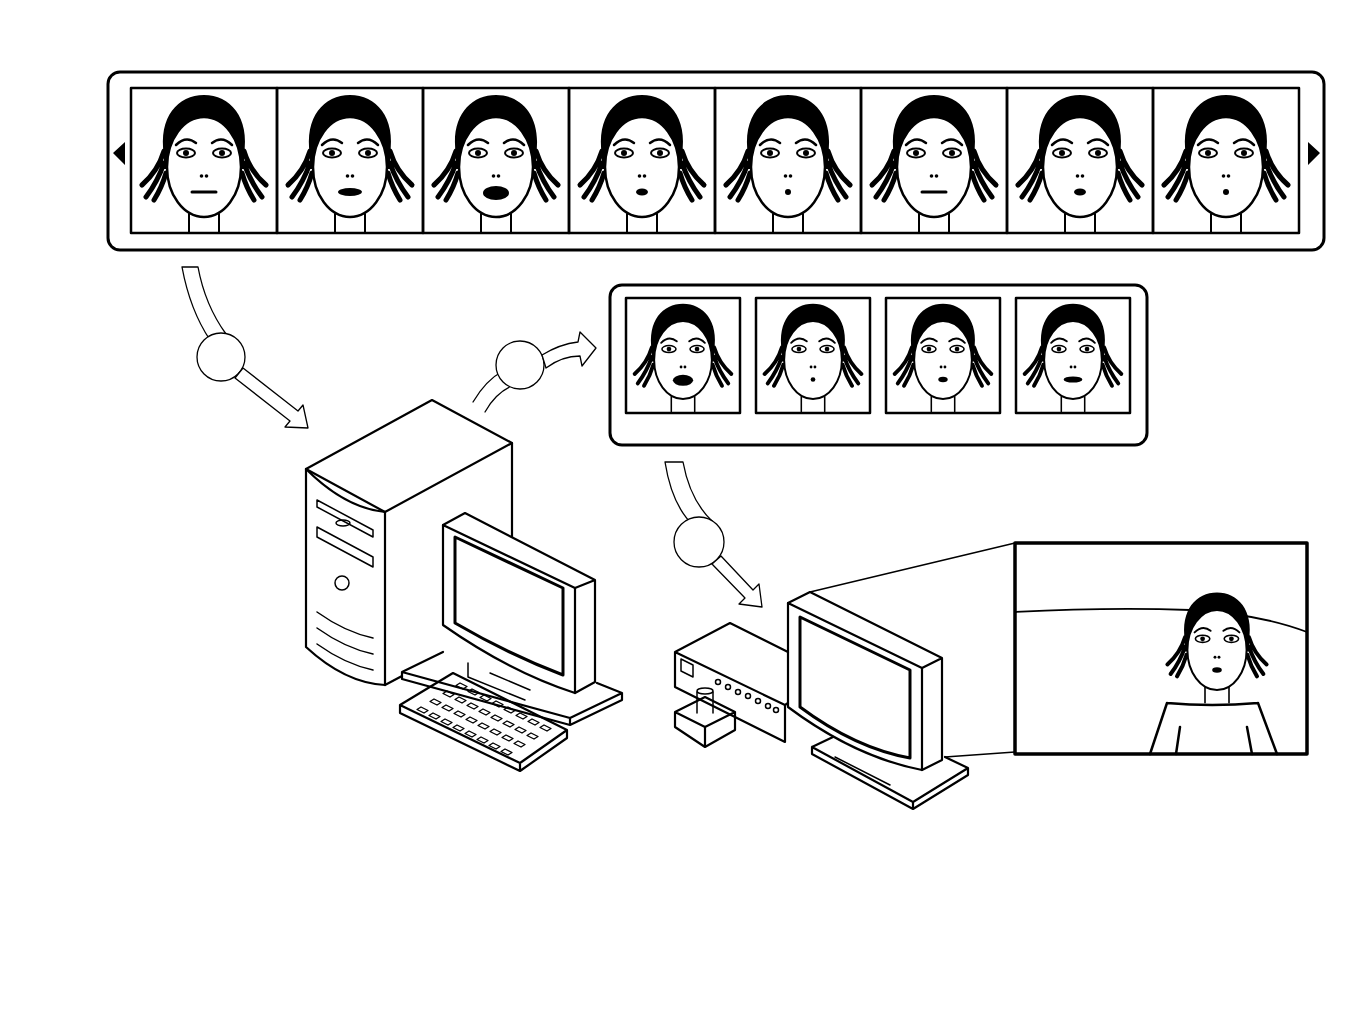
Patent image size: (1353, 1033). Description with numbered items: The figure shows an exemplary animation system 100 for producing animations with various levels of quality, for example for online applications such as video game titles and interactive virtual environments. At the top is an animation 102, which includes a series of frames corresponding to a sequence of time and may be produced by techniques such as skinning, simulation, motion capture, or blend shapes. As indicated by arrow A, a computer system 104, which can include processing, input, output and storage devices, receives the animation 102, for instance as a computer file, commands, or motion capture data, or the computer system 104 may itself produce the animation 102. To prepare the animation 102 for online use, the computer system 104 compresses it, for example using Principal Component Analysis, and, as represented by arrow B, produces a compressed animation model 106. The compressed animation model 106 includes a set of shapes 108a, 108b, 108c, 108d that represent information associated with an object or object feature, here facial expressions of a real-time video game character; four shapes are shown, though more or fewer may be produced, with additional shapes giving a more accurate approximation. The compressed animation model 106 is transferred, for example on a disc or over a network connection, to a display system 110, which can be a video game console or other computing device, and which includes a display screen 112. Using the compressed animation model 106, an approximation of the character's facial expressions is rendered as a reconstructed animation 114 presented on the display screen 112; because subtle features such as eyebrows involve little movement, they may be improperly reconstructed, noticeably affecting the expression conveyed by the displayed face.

The animation system 100 is at (181, 792).
The animation 102 is at (190, 72).
The computer system 104 is at (252, 556).
The compressed animation model 106 is at (1091, 446).
The shape 108a is at (640, 415).
The shape 108b is at (770, 415).
The shape 108c is at (900, 415).
The shape 108d is at (1030, 415).
The display system 110 is at (738, 754).
The display screen 112 is at (1077, 754).
The reconstructed animation 114 is at (1207, 602).